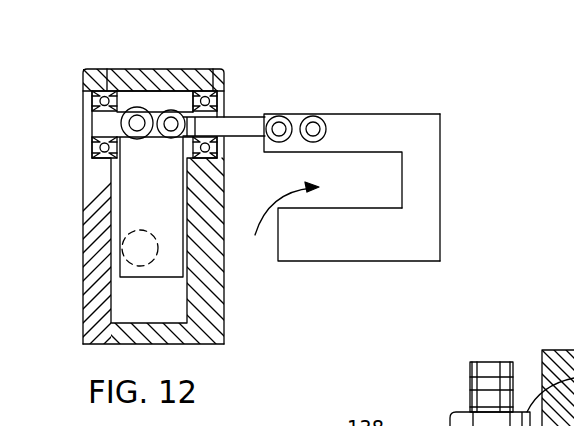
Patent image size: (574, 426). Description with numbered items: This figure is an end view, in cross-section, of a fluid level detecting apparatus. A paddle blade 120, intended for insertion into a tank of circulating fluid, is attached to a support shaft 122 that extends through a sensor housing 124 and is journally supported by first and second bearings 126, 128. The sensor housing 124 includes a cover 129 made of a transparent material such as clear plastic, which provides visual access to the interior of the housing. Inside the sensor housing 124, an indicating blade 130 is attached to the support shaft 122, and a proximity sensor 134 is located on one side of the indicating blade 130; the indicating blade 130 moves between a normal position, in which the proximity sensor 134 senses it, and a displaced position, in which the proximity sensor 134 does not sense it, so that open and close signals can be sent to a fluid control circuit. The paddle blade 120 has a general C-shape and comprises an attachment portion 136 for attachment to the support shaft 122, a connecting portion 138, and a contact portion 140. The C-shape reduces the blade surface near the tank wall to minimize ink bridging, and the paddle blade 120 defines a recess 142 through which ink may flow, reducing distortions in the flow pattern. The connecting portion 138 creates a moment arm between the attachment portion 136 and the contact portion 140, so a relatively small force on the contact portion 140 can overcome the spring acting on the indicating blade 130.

The paddle blade 120 is at (388, 184).
The support shaft 122 is at (238, 122).
The sensor housing 124 is at (157, 72).
The first bearing 126 is at (90, 94).
The second bearing 128 is at (204, 90).
The cover 129 is at (206, 178).
The indicating blade 130 is at (130, 185).
The proximity sensor 134 is at (157, 258).
The attachment portion 136 is at (387, 126).
The connecting portion 138 is at (422, 205).
The contact portion 140 is at (343, 240).
The recess 142 is at (277, 237).